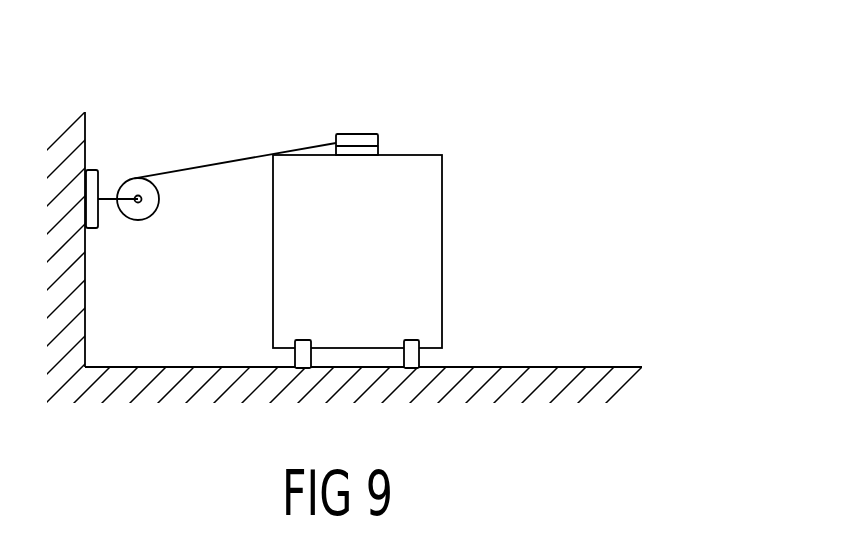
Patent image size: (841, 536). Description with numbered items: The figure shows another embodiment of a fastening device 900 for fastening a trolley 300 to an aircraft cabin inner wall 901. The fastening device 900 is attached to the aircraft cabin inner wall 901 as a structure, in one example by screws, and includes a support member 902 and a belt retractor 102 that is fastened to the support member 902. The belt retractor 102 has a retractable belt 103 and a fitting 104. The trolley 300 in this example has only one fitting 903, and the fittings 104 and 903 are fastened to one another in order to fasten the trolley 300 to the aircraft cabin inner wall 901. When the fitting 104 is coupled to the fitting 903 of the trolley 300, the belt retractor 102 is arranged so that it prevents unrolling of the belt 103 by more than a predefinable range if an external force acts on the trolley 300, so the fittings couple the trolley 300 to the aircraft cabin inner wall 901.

The aircraft cabin inner wall 901 is at (72, 118).
The fastening device 900 is at (116, 141).
The support member 902 is at (92, 230).
The belt retractor 102 is at (145, 214).
The belt 103 is at (234, 161).
The fitting 104 is at (363, 134).
The fitting 903 is at (378, 150).
The trolley 300 is at (413, 260).